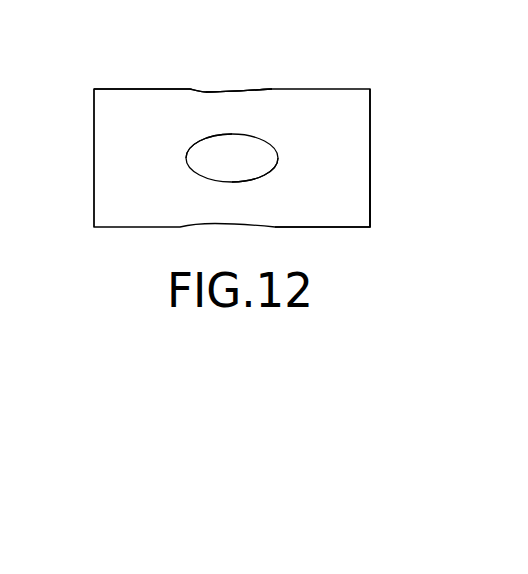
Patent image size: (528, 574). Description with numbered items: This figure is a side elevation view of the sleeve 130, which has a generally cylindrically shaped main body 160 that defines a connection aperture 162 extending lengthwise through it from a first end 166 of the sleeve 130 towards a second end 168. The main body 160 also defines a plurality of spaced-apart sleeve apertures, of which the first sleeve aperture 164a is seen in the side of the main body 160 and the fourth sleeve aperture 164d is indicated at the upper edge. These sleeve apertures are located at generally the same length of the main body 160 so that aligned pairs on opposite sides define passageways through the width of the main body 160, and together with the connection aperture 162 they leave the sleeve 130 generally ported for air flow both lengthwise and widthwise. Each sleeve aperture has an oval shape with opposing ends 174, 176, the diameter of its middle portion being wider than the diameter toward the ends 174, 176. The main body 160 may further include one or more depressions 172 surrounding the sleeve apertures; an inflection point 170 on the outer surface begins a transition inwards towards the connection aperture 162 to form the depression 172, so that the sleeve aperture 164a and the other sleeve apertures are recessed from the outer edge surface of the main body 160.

The sleeve 130 is at (373, 87).
The main body 160 is at (308, 100).
The connection aperture 162 is at (373, 162).
The first sleeve aperture 164a is at (213, 181).
The fourth sleeve aperture 164d is at (244, 90).
The first end 166 is at (372, 212).
The second end 168 is at (93, 214).
The inflection point 170 is at (205, 91).
The depression 172 is at (207, 91).
The end of sleeve aperture 174 is at (278, 160).
The end of sleeve aperture 176 is at (187, 158).